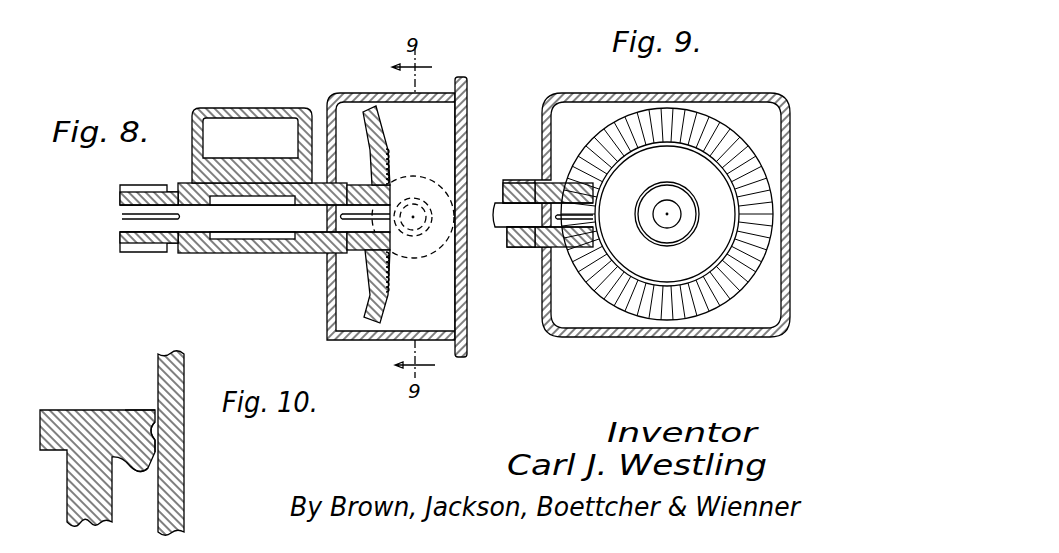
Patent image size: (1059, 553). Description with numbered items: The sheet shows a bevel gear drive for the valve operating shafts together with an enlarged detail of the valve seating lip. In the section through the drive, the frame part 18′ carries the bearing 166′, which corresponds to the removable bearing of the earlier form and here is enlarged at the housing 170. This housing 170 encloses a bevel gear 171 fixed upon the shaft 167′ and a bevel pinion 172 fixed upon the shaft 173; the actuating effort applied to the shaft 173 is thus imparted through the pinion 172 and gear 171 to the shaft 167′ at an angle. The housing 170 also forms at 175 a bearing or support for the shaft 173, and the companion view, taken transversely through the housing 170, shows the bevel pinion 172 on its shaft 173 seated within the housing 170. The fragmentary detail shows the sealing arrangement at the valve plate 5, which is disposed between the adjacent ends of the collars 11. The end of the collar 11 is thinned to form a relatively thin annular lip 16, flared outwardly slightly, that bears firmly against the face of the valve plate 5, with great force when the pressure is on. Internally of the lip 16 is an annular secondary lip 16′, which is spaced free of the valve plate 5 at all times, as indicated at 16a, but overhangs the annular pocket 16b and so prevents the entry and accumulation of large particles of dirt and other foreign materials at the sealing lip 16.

In FIG. 8, the frame part 18′ is at (262, 110).
In FIG. 8, the shaft 167′ is at (140, 222).
In FIG. 8, the bearing 166′ is at (230, 253).
In FIG. 8, the bevel gear 171 is at (368, 306).
In FIG. 9, the bevel gear 171 is at (617, 298).
In FIG. 8, the housing 170 is at (358, 338).
In FIG. 9, the housing 170 is at (693, 335).
In FIG. 9, the bevel pinion 172 is at (562, 255).
In FIG. 9, the shaft 173 is at (503, 183).
In FIG. 9, the bearing or support 175 is at (528, 247).
In FIG. 10, the collar 11 is at (68, 418).
In FIG. 10, the secondary lip 16′ is at (140, 410).
In FIG. 10, the space 16a is at (156, 420).
In FIG. 10, the annular pocket 16b is at (157, 440).
In FIG. 10, the annular lip 16 is at (152, 470).
In FIG. 10, the valve plate 5 is at (175, 518).